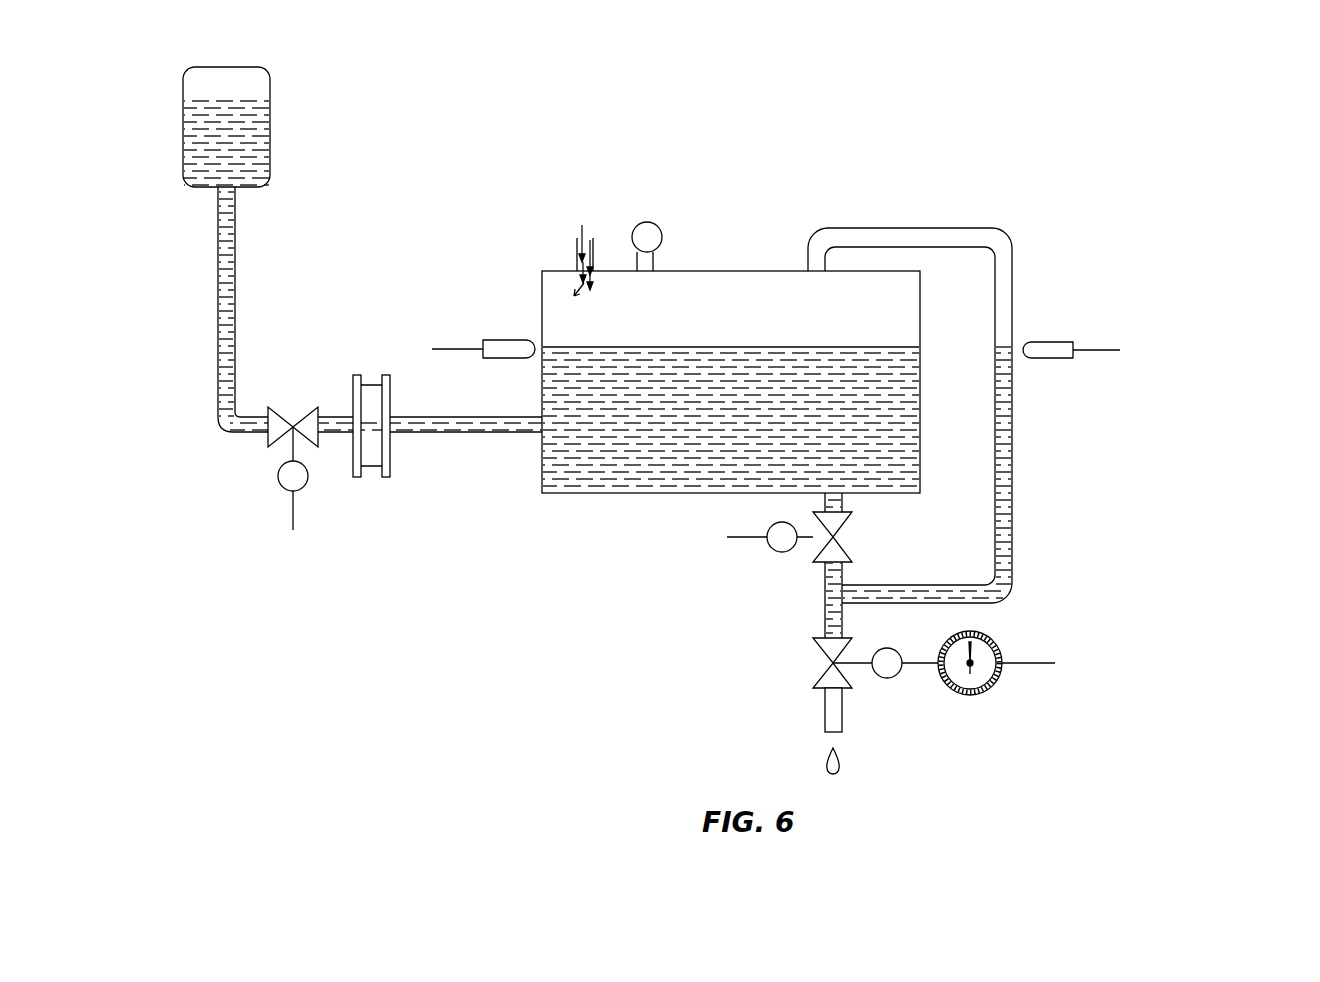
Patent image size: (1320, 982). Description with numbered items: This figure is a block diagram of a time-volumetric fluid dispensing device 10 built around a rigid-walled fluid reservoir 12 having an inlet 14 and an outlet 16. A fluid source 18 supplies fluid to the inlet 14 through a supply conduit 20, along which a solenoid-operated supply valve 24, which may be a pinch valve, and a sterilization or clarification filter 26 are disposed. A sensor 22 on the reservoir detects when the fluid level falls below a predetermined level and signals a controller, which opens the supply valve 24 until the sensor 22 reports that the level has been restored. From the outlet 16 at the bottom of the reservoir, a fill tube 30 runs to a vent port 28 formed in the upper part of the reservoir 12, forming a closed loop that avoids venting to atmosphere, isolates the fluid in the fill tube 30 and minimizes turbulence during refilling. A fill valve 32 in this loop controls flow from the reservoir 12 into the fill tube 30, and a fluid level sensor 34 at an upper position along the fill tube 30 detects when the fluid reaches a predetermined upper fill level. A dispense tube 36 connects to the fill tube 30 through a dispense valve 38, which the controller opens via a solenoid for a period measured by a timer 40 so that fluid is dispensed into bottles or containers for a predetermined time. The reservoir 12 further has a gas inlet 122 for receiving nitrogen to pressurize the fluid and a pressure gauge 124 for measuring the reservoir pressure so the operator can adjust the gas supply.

The fluid dispensing device 10 is at (1053, 108).
The fluid reservoir 12 is at (690, 271).
The inlet 14 is at (542, 423).
The outlet 16 is at (836, 488).
The fluid source 18 is at (270, 107).
The supply conduit 20 is at (217, 278).
The sensor 22 is at (508, 340).
The supply valve 24 is at (268, 437).
The filter 26 is at (390, 455).
The vent port 28 is at (814, 275).
The fill tube 30 is at (1014, 285).
The fill valve 32 is at (852, 550).
The fluid level sensor 34 is at (1040, 342).
The dispense tube 36 is at (845, 715).
The dispense valve 38 is at (813, 673).
The timer 40 is at (1000, 640).
The inlet 122 is at (577, 250).
The pressure gauge 124 is at (660, 230).